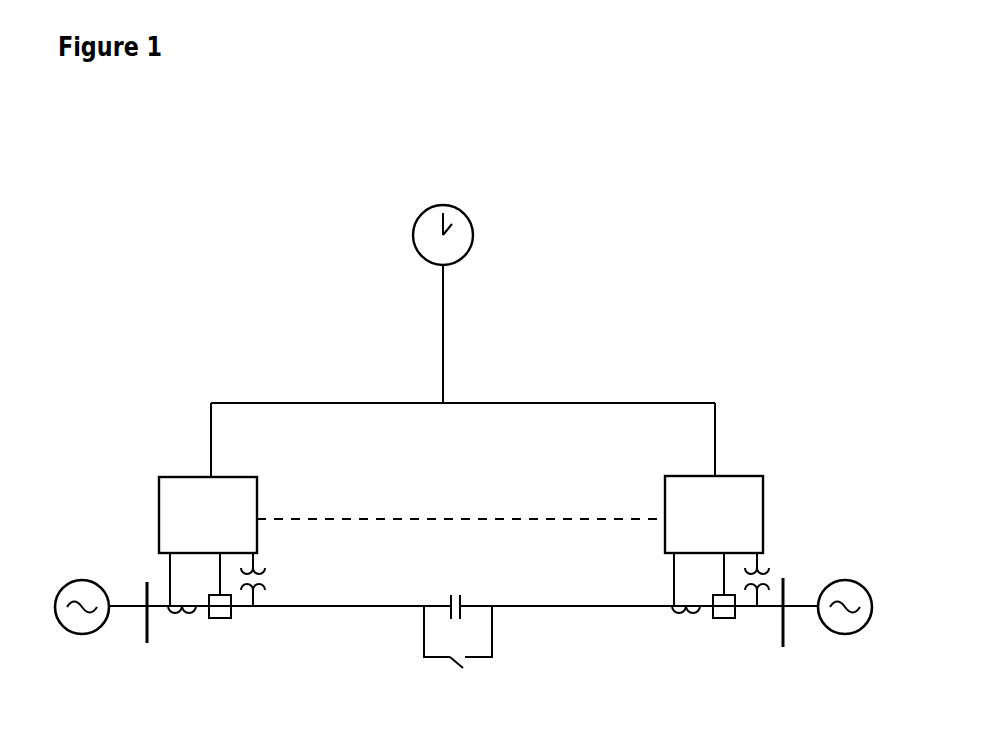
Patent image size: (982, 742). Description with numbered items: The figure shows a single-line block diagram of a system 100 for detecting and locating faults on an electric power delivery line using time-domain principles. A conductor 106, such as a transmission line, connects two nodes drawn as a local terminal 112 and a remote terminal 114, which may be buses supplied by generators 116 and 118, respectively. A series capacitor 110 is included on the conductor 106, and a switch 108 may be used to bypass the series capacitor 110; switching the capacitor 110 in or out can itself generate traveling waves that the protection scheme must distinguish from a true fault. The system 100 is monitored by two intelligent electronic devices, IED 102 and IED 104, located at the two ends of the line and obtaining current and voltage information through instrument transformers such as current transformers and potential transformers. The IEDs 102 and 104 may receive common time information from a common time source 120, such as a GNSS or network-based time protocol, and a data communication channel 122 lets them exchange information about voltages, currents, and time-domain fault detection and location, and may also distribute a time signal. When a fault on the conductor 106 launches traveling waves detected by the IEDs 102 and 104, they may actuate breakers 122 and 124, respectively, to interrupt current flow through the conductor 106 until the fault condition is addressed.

The system 100 is at (223, 266).
The intelligent electronic device 102 is at (257, 503).
The intelligent electronic device 104 is at (665, 510).
The conductor 106 is at (283, 607).
The switch 108 is at (455, 662).
The series capacitor 110 is at (460, 598).
The local terminal 112 is at (144, 642).
The remote terminal 114 is at (785, 642).
The generator 116 is at (60, 625).
The generator 118 is at (866, 627).
The common time source 120 is at (473, 232).
The data communication channel 122 is at (462, 518).
The breaker 124 is at (716, 618).